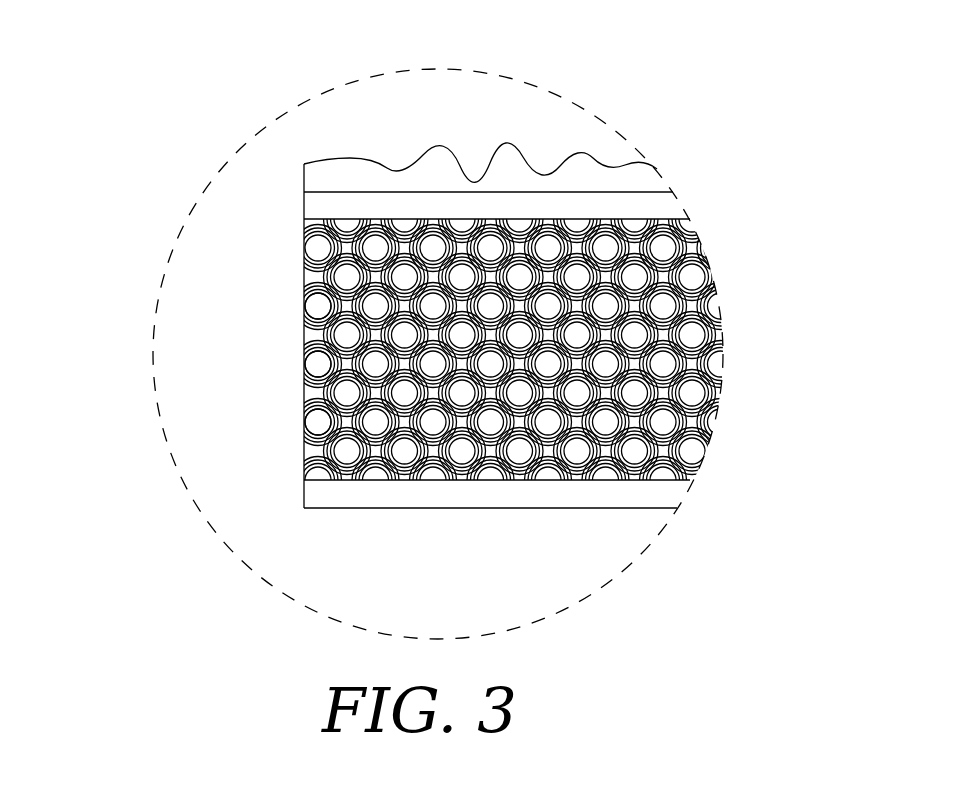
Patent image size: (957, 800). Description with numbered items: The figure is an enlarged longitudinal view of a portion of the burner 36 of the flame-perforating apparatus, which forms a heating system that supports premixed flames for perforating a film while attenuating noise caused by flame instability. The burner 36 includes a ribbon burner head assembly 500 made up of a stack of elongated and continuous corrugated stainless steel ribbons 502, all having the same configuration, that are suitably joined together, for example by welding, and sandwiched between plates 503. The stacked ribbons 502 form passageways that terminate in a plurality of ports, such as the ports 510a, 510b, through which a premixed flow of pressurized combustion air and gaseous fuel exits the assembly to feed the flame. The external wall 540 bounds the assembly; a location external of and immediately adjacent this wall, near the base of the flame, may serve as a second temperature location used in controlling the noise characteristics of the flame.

The burner 36 is at (532, 157).
The external wall 540 is at (560, 177).
The plates 503 is at (602, 202).
The ribbon burner head assembly 500 is at (700, 197).
The corrugated stainless steel ribbons 502 is at (303, 233).
The port 510a is at (317, 308).
The port 510b is at (317, 365).